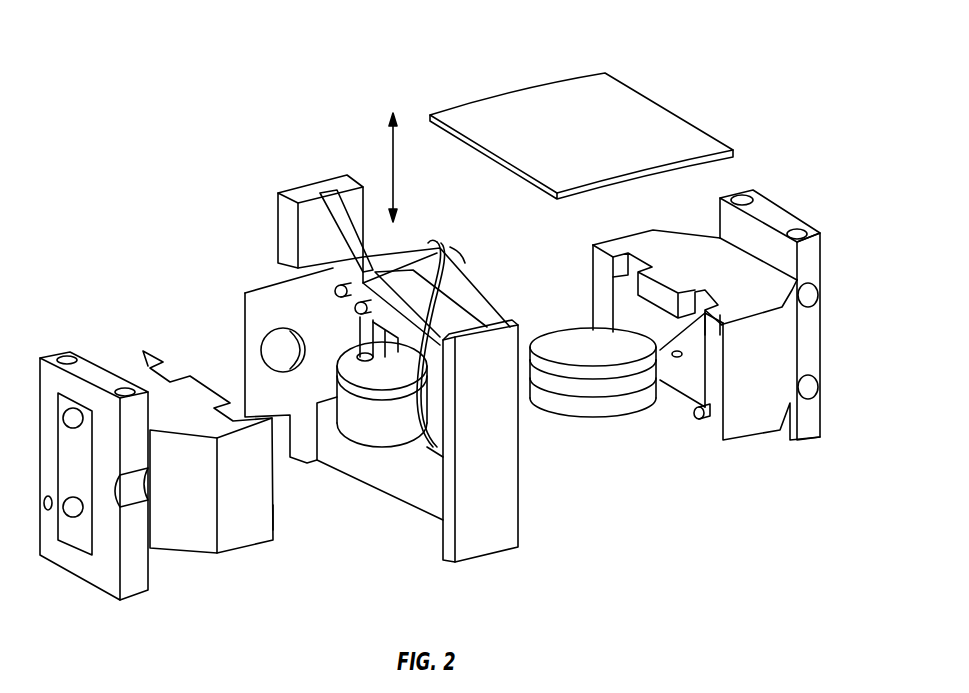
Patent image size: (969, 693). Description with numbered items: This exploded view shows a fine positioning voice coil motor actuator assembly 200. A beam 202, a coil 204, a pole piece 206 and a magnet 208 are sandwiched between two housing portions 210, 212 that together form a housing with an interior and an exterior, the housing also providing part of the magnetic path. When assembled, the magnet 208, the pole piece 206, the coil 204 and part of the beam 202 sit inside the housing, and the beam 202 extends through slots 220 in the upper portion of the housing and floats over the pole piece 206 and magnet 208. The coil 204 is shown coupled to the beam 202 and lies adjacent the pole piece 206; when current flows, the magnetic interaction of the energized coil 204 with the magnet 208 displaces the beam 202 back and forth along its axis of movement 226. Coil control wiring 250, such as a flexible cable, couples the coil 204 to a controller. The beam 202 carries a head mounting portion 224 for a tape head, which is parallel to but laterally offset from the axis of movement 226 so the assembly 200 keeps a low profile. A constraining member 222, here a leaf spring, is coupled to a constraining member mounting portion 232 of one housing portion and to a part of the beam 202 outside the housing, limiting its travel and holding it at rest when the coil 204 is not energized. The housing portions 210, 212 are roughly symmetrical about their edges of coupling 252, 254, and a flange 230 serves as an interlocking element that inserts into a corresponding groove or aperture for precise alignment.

The VCM actuator assembly 200 is at (150, 116).
The beam 202 is at (504, 512).
The coil 204 is at (373, 433).
The pole piece 206 is at (582, 337).
The magnet 208 is at (587, 412).
The housing portion 210 is at (173, 543).
The housing portion 212 is at (717, 253).
The slots 220 is at (232, 412).
The constraining member 222 is at (662, 116).
The head mounting portion 224 is at (304, 189).
The axis of movement 226 is at (384, 143).
The flange 230 is at (690, 419).
The constraining member mounting portion 232 is at (774, 212).
The coil control wiring 250 is at (453, 287).
The edge of coupling 252 is at (277, 517).
The edge of coupling 254 is at (683, 410).